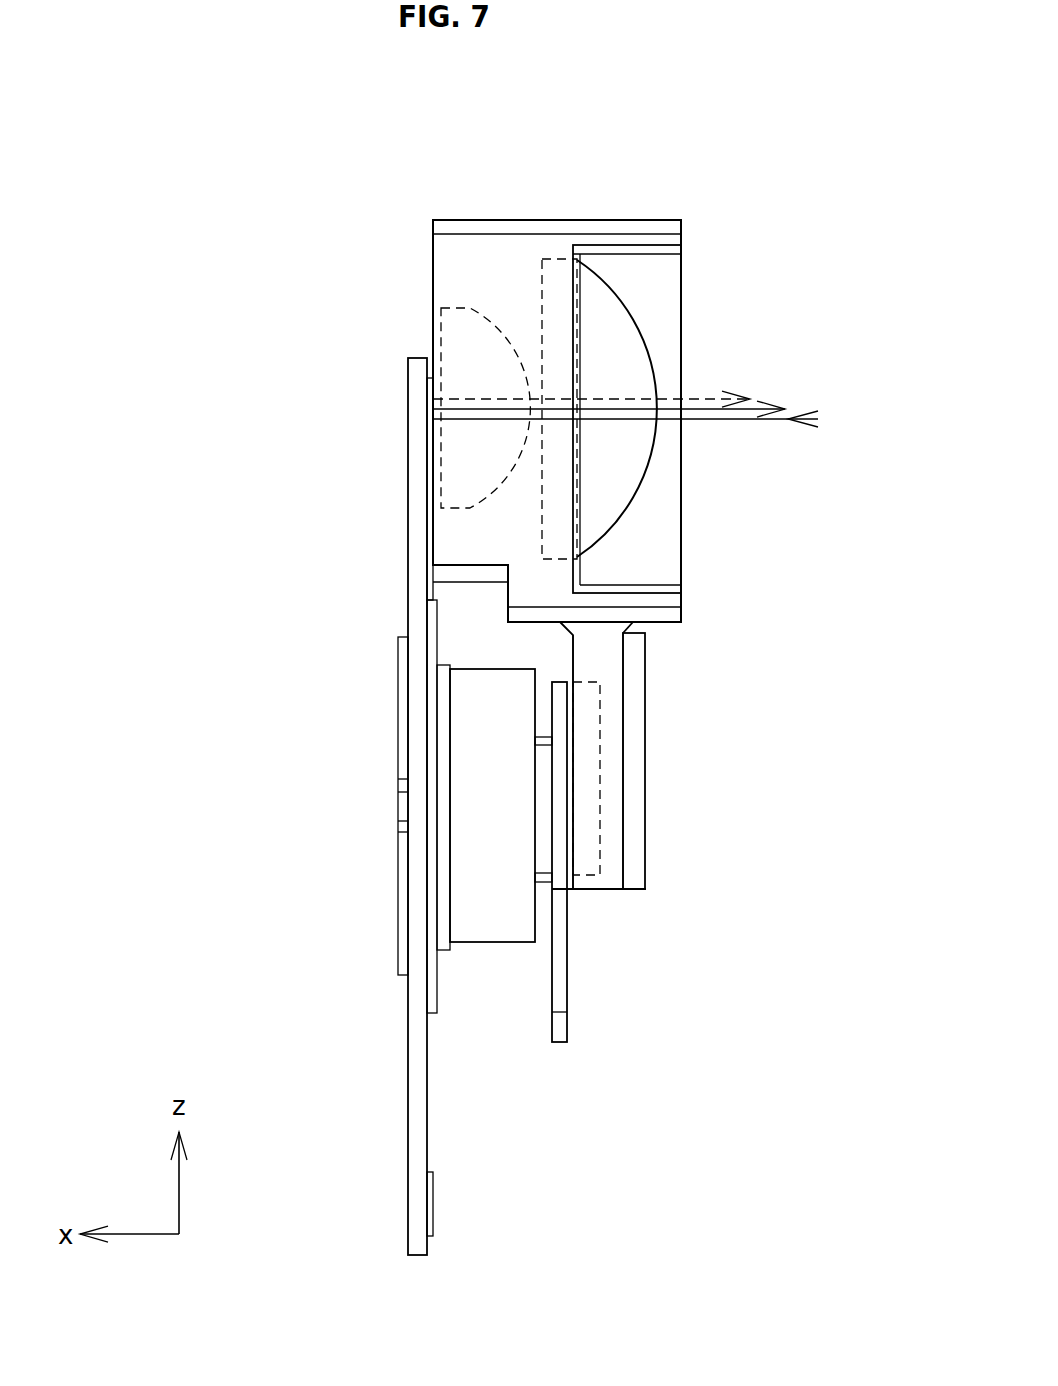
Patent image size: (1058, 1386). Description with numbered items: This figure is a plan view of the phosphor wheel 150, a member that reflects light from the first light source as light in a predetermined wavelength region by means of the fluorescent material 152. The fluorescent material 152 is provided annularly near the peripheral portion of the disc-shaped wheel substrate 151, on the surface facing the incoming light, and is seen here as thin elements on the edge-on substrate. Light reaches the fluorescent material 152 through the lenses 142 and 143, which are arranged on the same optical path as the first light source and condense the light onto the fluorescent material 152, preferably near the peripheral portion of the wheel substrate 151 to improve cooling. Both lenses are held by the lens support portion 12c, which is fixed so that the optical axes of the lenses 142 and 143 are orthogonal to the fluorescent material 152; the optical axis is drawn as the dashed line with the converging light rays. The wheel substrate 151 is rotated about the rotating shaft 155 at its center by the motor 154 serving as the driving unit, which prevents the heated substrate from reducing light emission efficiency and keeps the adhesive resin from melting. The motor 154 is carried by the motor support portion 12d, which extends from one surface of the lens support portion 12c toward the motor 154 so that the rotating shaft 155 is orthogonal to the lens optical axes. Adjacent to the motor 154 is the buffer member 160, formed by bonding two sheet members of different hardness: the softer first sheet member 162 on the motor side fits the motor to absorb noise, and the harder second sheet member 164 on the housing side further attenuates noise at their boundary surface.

The phosphor wheel 150 is at (709, 150).
The lens 142 is at (617, 352).
The lens support portion 12c is at (538, 250).
The lens 143 is at (465, 345).
The wheel substrate 151 is at (407, 1152).
The fluorescent material 152 is at (431, 374).
The motor 154 is at (494, 943).
The rotating shaft 155 is at (557, 867).
The buffer member 160 is at (652, 849).
The first sheet member 162 is at (612, 890).
The second sheet member 164 is at (633, 890).
The motor support portion 12d is at (600, 890).